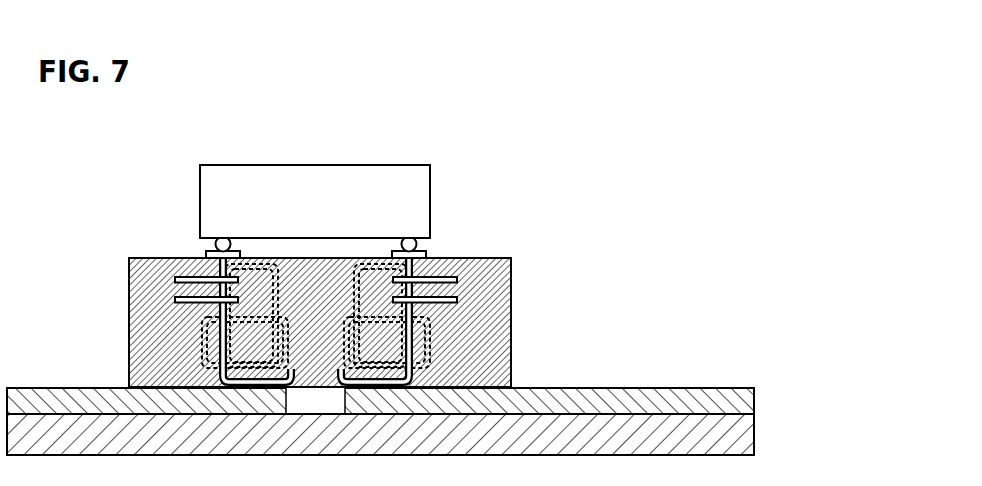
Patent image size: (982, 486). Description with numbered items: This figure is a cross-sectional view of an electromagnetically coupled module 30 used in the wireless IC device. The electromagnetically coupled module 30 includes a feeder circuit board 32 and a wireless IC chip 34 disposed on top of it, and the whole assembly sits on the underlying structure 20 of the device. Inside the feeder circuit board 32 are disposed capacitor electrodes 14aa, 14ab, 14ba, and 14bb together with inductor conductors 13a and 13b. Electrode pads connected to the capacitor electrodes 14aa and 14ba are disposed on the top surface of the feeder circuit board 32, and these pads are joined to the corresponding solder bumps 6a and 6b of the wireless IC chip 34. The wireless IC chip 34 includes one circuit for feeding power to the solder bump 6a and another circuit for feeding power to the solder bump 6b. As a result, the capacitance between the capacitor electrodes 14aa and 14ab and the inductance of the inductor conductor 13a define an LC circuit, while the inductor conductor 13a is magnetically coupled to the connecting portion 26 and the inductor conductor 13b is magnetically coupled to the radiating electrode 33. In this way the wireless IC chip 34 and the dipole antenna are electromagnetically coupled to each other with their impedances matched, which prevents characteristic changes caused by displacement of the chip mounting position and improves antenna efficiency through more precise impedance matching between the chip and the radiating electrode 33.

The substrate 20 is at (752, 437).
The radiating electrode 33 is at (687, 388).
The connecting portion 26 is at (45, 388).
The feeder circuit board 32 is at (493, 257).
The wireless IC chip 34 is at (300, 172).
The solder bump 6a is at (222, 242).
The solder bump 6b is at (412, 243).
The capacitor electrode 14aa is at (175, 277).
The capacitor electrode 14ab is at (175, 298).
The capacitor electrode 14ba is at (458, 277).
The capacitor electrode 14bb is at (458, 296).
The inductor conductor 13a is at (218, 348).
The inductor conductor 13b is at (430, 343).
The electromagnetically coupled module 30 is at (532, 155).